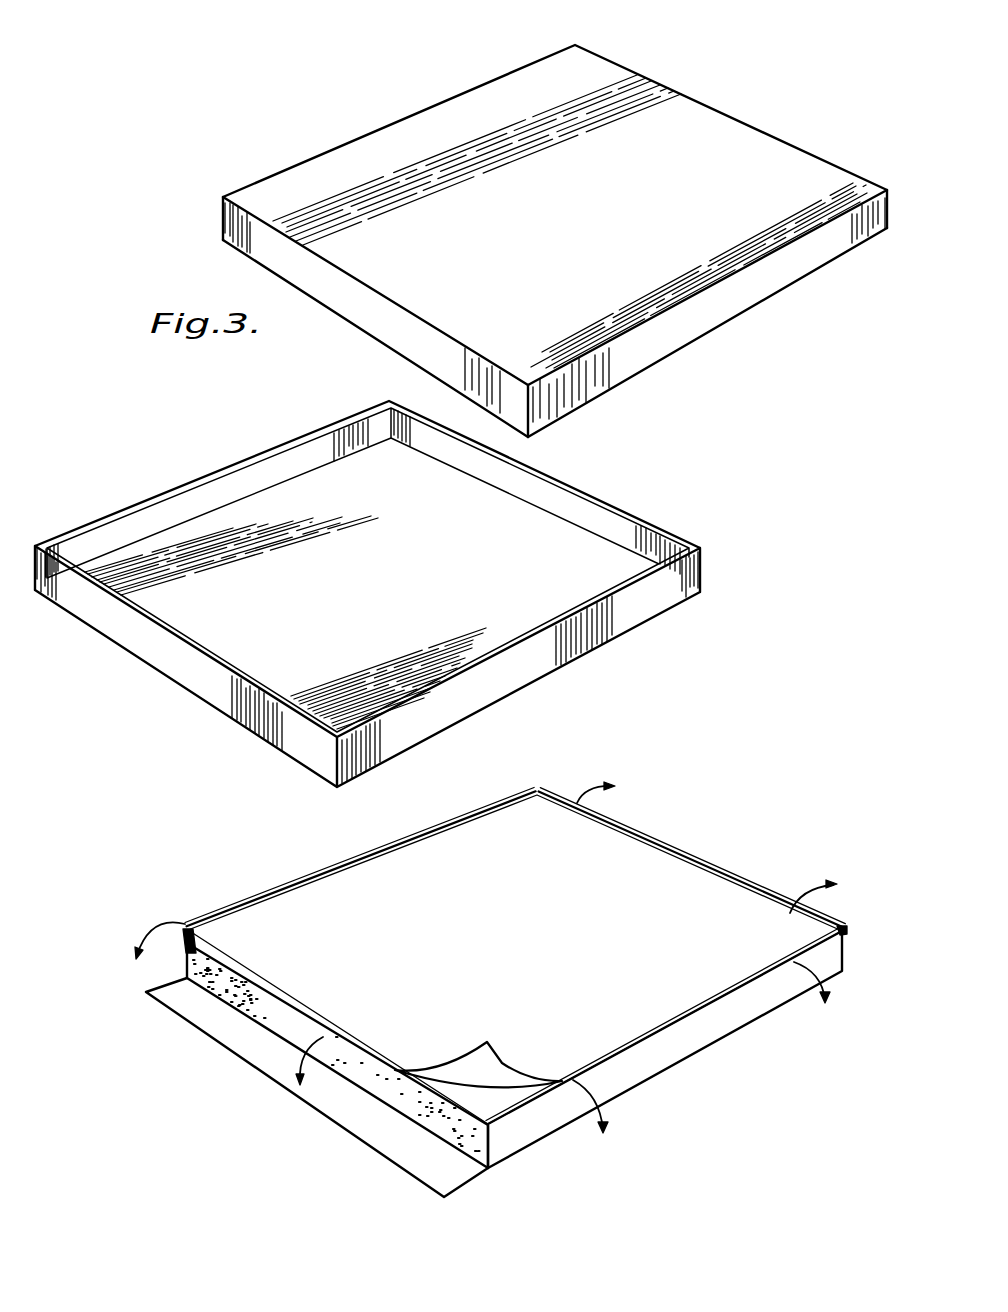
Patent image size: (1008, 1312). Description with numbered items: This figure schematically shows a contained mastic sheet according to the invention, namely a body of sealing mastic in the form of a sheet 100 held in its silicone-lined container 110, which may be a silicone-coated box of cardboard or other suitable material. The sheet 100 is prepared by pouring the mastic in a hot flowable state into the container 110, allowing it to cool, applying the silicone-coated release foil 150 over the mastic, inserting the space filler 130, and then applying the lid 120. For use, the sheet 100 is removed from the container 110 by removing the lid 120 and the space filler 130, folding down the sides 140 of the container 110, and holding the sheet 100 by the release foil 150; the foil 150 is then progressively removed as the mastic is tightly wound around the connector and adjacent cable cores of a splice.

The sheet 100 is at (458, 1103).
The silicone-lined container 110 is at (636, 1086).
The lid 120 is at (722, 150).
The space filler 130 is at (213, 628).
The sides 140 is at (291, 882).
The release foil 150 is at (500, 1063).